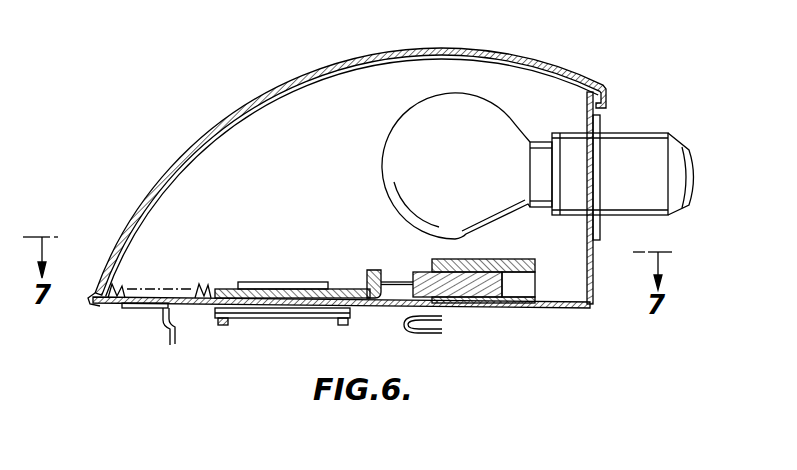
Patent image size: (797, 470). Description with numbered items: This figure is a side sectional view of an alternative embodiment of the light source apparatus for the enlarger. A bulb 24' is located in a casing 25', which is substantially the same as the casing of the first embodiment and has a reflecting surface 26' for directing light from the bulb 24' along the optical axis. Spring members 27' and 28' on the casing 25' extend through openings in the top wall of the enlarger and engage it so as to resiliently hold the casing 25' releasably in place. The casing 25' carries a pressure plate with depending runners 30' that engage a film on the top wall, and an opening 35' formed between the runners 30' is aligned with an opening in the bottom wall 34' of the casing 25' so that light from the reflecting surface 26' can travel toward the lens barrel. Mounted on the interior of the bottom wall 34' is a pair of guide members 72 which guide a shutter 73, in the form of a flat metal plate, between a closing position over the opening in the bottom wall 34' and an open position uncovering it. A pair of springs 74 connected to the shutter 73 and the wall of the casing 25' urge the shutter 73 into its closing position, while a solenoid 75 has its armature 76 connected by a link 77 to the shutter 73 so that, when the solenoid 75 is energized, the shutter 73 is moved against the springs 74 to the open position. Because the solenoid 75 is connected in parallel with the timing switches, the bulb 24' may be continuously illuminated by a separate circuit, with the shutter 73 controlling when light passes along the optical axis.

The bulb 24' is at (456, 130).
The casing 25' is at (347, 177).
The reflecting surface 26' is at (352, 177).
The spring member 27' is at (137, 335).
The spring member 28' is at (452, 335).
The runners 30' is at (266, 353).
The bottom wall 34' is at (341, 338).
The opening 35' is at (282, 333).
The guide members 72 is at (268, 285).
The shutter 73 is at (367, 272).
The springs 74 is at (210, 286).
The solenoid 75 is at (535, 300).
The armature 76 is at (488, 282).
The link 77 is at (388, 280).